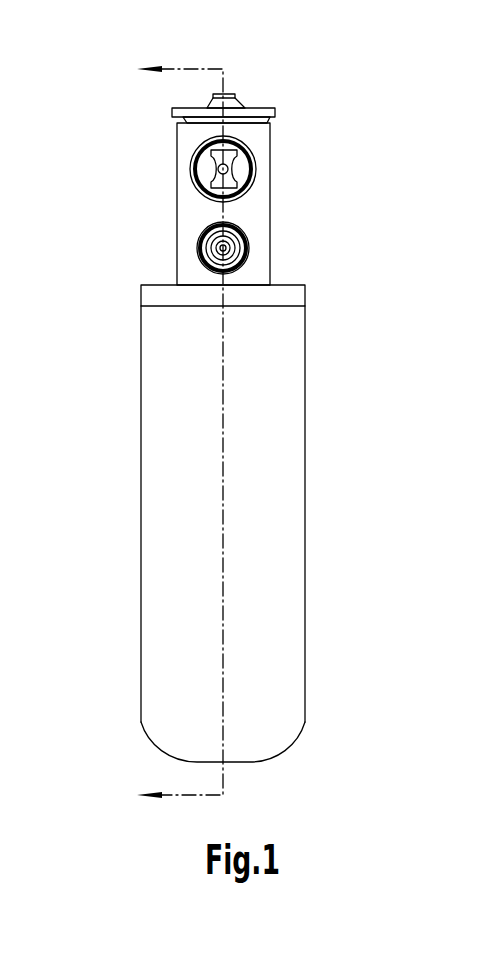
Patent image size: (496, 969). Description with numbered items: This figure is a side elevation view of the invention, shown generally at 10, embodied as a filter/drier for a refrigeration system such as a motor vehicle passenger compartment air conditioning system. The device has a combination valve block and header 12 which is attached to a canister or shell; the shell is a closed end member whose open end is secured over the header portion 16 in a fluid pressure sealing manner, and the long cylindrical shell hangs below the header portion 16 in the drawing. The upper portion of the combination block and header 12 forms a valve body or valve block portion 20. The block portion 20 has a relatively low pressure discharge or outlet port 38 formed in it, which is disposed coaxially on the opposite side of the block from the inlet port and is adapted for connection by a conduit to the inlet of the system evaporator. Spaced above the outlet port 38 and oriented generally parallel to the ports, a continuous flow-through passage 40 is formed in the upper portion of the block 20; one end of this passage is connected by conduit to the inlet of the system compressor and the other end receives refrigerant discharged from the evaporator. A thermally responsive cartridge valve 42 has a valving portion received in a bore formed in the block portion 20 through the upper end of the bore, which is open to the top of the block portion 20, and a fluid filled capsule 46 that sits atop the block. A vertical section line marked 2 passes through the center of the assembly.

The section line 2- 2 is at (180, 437).
The filter/drier 10 is at (222, 404).
The combination valve block and header 12 is at (220, 166).
The header portion 16 is at (306, 300).
The valve body or valve block portion 20 is at (178, 163).
The outlet port 38 is at (250, 243).
The flow-through passage 40 is at (286, 147).
The thermally responsive cartridge valve 42 is at (237, 163).
The fluid filled capsule 46 is at (256, 96).